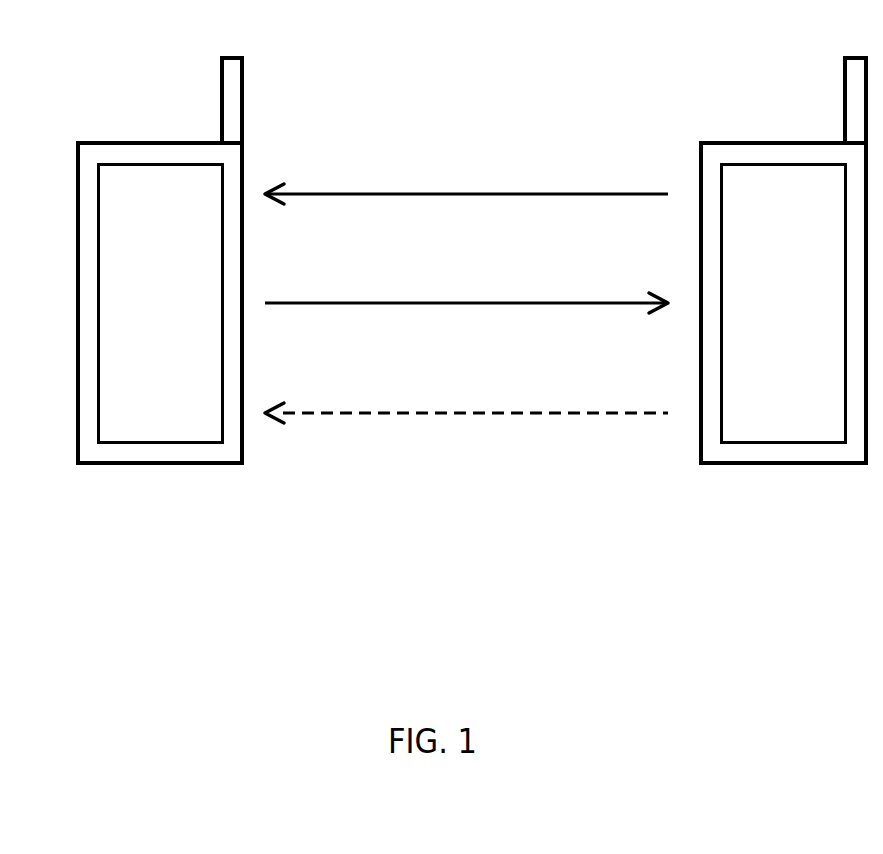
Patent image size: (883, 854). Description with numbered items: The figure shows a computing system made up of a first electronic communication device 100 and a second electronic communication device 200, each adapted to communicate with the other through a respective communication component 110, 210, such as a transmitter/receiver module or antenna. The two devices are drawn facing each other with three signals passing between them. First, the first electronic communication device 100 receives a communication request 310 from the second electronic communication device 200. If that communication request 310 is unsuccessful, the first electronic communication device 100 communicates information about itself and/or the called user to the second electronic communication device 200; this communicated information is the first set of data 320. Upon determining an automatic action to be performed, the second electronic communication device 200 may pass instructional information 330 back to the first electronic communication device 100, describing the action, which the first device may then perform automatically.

The first electronic communication device 100 is at (160, 467).
The communication component 110 is at (220, 100).
The second electronic communication device 200 is at (803, 467).
The communication component 210 is at (840, 108).
The communication request 310 is at (367, 192).
The first set of data 320 is at (350, 300).
The instructional information 330 is at (400, 415).